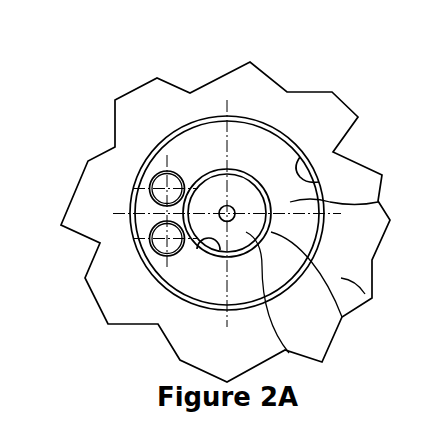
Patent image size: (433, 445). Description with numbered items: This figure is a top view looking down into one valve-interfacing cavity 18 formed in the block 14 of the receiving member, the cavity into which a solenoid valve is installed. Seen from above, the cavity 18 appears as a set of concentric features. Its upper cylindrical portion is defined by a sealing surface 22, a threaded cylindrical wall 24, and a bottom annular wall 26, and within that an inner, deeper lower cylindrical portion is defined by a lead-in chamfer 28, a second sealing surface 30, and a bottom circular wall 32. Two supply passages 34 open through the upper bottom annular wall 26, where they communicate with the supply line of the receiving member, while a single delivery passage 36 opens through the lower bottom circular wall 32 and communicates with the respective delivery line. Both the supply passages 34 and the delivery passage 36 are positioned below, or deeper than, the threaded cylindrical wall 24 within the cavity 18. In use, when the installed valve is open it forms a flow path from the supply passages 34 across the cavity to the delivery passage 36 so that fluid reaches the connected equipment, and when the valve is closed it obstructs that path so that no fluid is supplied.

The block 14 is at (365, 294).
The valve-interfacing cavity 18 is at (302, 82).
The sealing surface 22 is at (247, 120).
The threaded cylindrical wall 24 is at (315, 184).
The bottom annular wall 26 is at (378, 202).
The lead-in chamfer 28 is at (342, 317).
The sealing surface 30 is at (197, 244).
The bottom circular wall 32 is at (289, 353).
The supply passages 34 is at (150, 184).
The delivery passage 36 is at (230, 221).